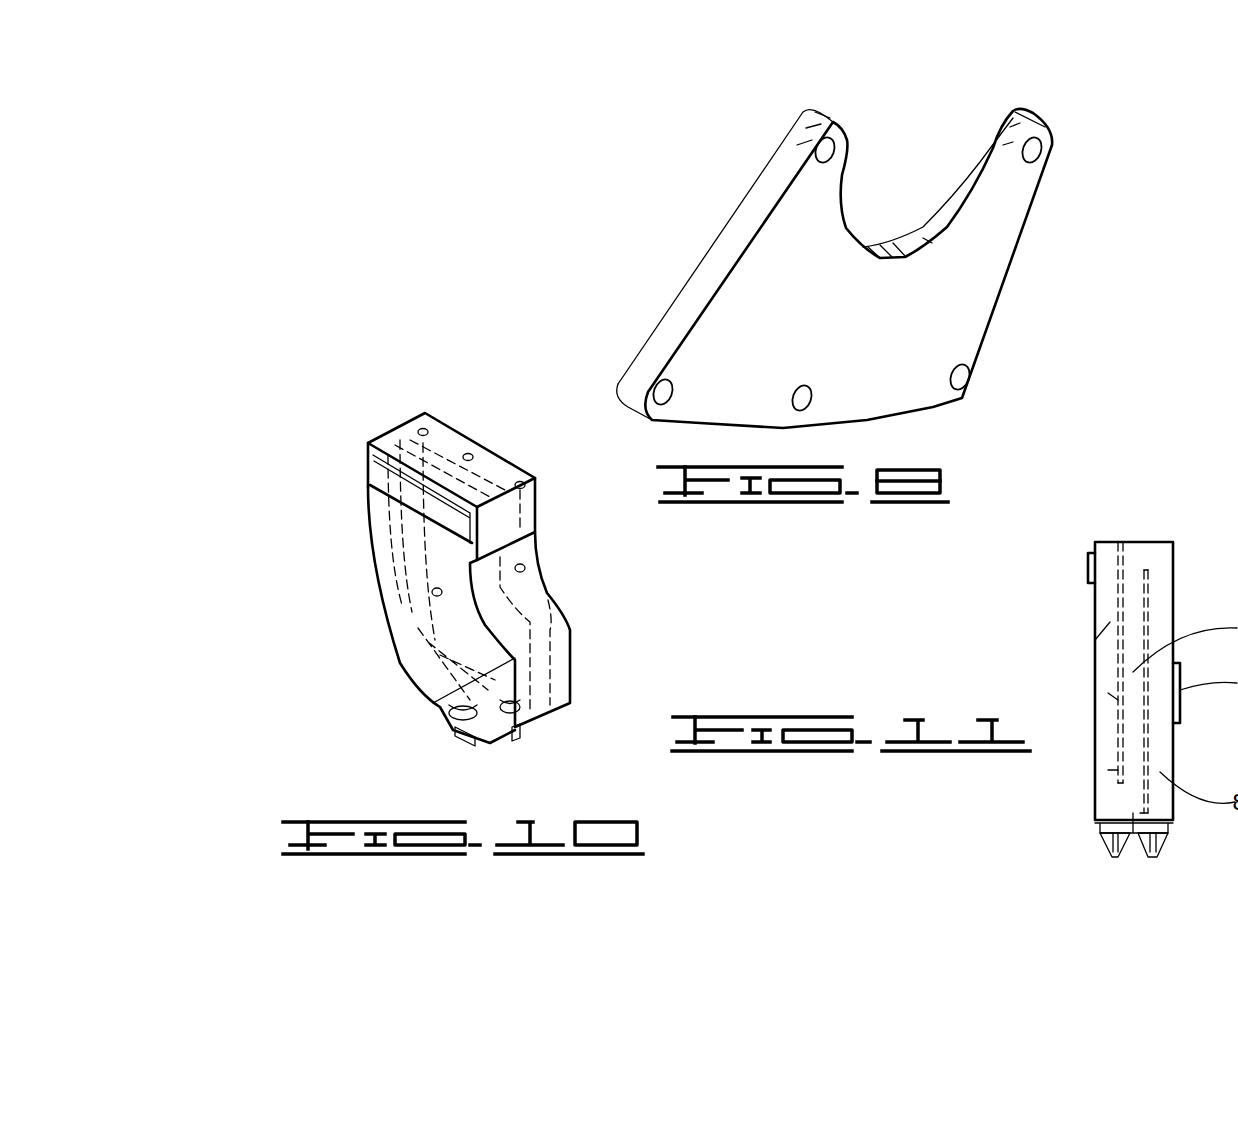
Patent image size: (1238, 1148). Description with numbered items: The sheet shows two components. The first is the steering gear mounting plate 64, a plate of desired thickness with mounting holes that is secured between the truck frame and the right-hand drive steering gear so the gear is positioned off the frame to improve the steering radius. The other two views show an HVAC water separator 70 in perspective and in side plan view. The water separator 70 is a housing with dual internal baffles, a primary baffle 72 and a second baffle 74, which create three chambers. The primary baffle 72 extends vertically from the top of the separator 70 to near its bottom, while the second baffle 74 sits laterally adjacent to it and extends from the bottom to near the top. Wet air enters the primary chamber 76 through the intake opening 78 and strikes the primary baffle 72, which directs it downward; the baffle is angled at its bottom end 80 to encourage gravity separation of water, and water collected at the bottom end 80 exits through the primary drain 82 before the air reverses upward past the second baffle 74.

In FIG. 9, the steering gear mounting plate 64 is at (1017, 262).
In FIG. 10, the HVAC water separator 70 is at (420, 417).
In FIG. 11, the HVAC water separator 70 is at (1162, 542).
In FIG. 10, the primary baffle 72 is at (368, 494).
In FIG. 11, the primary baffle 72 is at (1118, 570).
In FIG. 10, the second baffle 74 is at (537, 500).
In FIG. 11, the second baffle 74 is at (1147, 638).
In FIG. 11, the primary chamber 76 is at (1110, 622).
In FIG. 10, the intake opening 78 is at (372, 467).
In FIG. 11, the intake opening 78 is at (1090, 583).
In FIG. 10, the bottom end 80 is at (400, 613).
In FIG. 11, the bottom end 80 is at (1108, 693).
In FIG. 10, the primary drain 82 is at (457, 737).
In FIG. 11, the primary drain 82 is at (1237, 873).